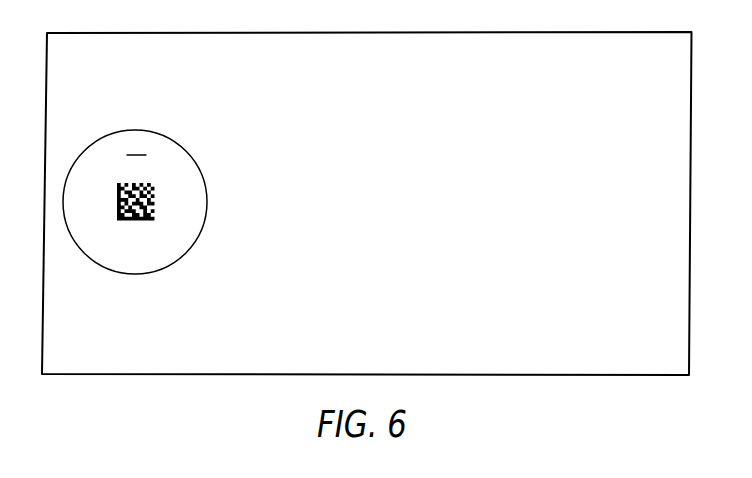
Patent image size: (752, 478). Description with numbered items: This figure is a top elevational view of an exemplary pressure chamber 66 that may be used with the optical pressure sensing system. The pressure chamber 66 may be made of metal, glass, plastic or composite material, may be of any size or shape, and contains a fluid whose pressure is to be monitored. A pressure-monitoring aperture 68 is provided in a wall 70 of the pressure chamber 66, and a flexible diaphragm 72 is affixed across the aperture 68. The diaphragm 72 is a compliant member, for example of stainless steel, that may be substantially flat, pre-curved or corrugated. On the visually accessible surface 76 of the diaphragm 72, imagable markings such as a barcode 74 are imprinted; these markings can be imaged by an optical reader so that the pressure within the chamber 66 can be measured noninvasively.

The pressure chamber 66 is at (542, 375).
The pressure-monitoring aperture 68 is at (160, 265).
The wall 70 is at (513, 144).
The flexible diaphragm 72 is at (139, 155).
The barcode 74 is at (155, 205).
The visually accessible surface 76 is at (135, 260).